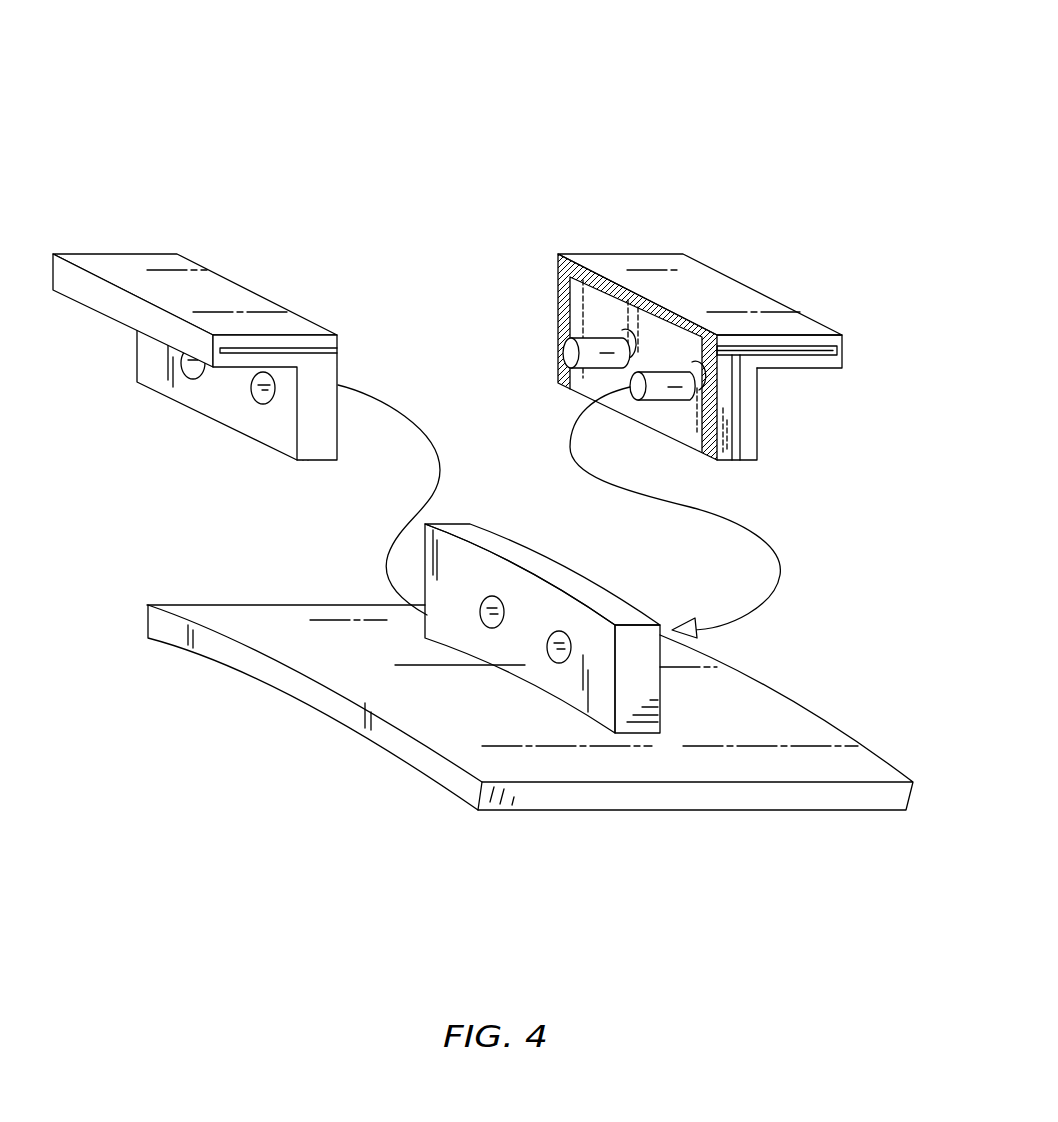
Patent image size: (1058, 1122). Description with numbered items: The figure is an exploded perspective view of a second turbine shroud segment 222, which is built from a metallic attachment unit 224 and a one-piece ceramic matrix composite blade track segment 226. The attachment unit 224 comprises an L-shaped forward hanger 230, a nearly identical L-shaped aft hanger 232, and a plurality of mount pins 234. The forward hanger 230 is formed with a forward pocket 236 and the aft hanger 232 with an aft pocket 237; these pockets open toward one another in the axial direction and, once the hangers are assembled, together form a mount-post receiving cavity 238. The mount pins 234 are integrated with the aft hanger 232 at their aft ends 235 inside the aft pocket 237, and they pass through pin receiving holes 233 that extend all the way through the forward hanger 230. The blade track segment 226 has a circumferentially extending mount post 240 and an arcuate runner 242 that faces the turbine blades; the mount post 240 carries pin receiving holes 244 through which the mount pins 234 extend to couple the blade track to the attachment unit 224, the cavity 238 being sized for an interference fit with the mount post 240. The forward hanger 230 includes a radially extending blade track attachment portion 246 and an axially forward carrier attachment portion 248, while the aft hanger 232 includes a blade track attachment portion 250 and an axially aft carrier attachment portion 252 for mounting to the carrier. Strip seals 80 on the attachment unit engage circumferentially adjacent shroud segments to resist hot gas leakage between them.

The turbine shroud segment 222 is at (101, 104).
The attachment unit 224 is at (508, 185).
The ceramic matrix composite blade track segment 226 is at (202, 728).
The forward hanger 230 is at (133, 233).
The aft hanger 232 is at (622, 228).
The pin receiving holes 233 is at (255, 393).
The mount pins 234 is at (621, 384).
The aft ends 235 is at (698, 360).
The forward pocket 236 is at (358, 356).
The aft pocket 237 is at (585, 305).
The mount-post receiving cavity 238 is at (450, 229).
The mount post 240 is at (363, 570).
The runner 242 is at (400, 751).
The pin receiving holes 244 is at (533, 660).
The blade track attachment portion 246 is at (147, 375).
The carrier attachment portion 248 is at (78, 298).
The blade track attachment portion 250 is at (775, 419).
The carrier attachment portion 252 is at (862, 356).
The strip seals 80 is at (800, 348).